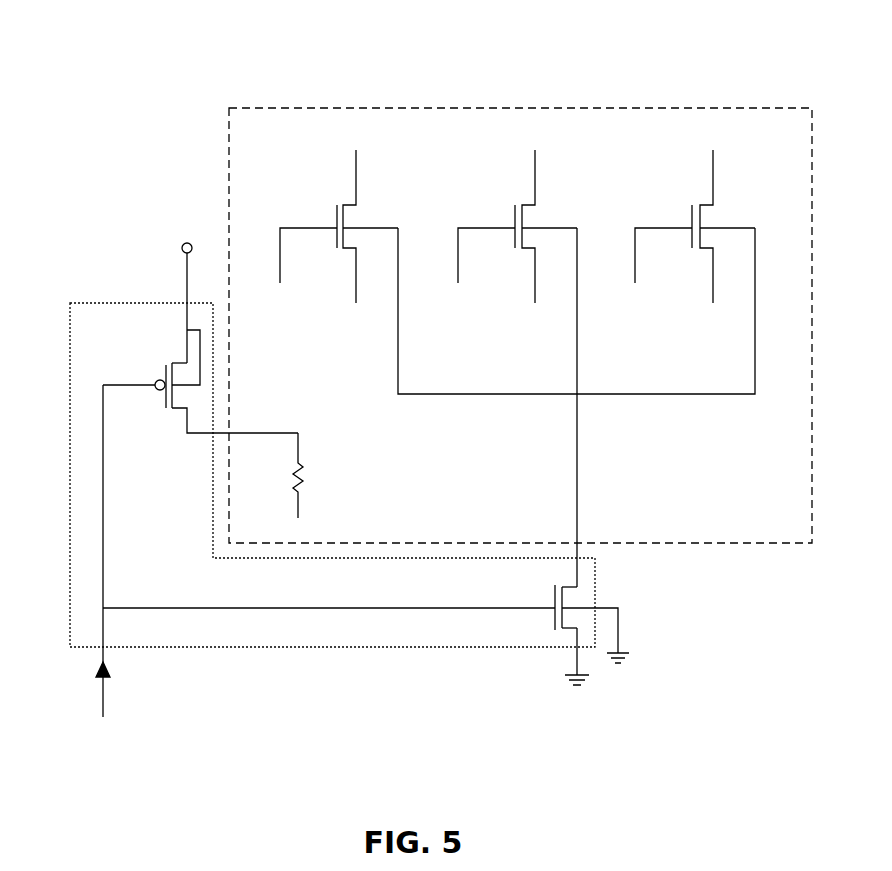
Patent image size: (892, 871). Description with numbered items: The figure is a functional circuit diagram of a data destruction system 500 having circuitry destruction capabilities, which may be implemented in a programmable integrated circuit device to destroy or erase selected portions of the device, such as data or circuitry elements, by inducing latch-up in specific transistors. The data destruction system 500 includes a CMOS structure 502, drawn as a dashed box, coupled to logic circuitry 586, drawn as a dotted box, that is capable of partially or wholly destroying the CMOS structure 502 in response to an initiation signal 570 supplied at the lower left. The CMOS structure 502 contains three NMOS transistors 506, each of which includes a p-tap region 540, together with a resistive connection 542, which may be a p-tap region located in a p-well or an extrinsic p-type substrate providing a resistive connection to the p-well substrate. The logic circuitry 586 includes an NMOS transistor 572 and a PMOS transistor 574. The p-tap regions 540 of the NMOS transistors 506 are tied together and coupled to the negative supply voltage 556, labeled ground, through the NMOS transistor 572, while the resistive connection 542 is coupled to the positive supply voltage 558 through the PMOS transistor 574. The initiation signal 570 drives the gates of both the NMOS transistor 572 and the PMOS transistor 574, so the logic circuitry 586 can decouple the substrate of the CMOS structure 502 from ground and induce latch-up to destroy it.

The data destruction system 500 is at (432, 30).
The CMOS structure 502 is at (258, 107).
The NMOS transistors 506 is at (328, 220).
The p-tap regions 540 is at (345, 223).
The resistive connection 542 is at (313, 487).
The negative supply voltage 556 is at (565, 688).
The positive supply voltage 558 is at (178, 258).
The initiation signal 570 is at (110, 695).
The NMOS transistor 572 is at (550, 600).
The PMOS transistor 574 is at (150, 375).
The logic circuitry 586 is at (257, 648).